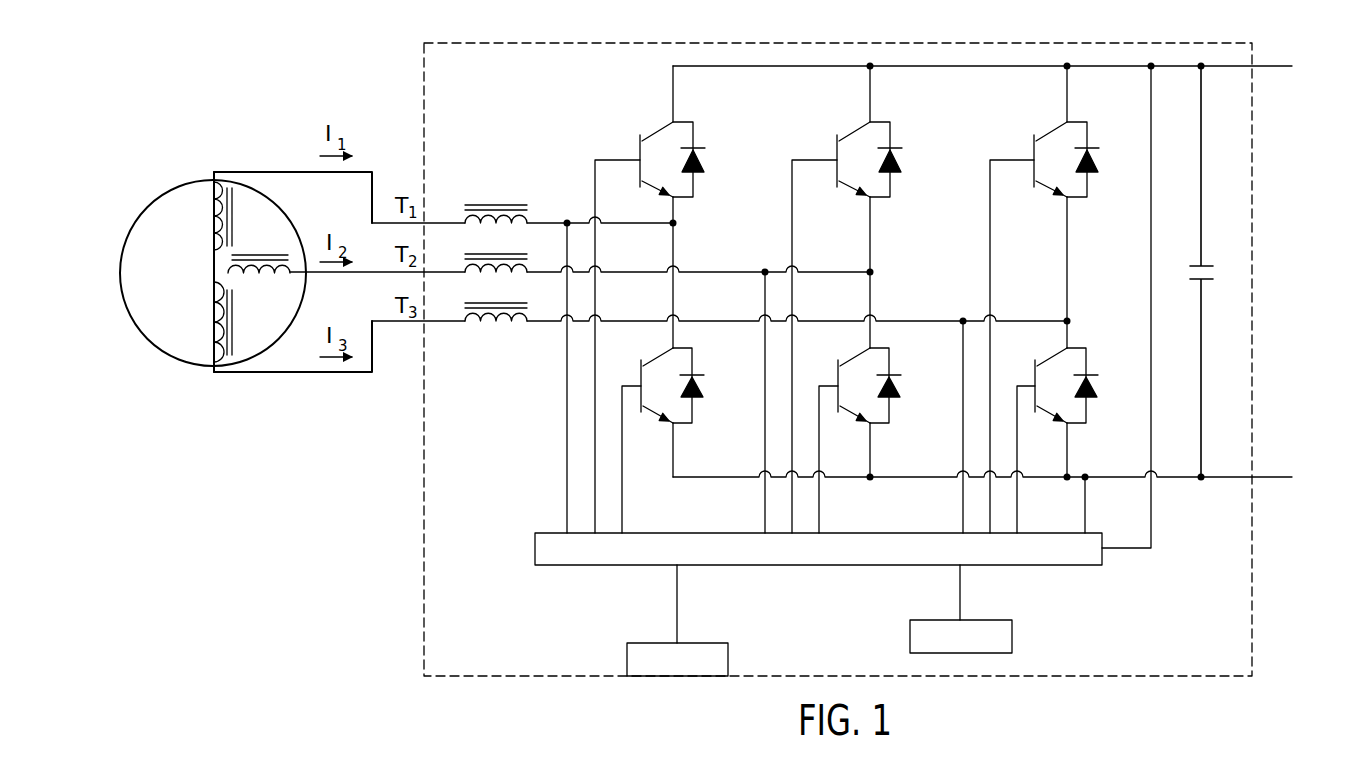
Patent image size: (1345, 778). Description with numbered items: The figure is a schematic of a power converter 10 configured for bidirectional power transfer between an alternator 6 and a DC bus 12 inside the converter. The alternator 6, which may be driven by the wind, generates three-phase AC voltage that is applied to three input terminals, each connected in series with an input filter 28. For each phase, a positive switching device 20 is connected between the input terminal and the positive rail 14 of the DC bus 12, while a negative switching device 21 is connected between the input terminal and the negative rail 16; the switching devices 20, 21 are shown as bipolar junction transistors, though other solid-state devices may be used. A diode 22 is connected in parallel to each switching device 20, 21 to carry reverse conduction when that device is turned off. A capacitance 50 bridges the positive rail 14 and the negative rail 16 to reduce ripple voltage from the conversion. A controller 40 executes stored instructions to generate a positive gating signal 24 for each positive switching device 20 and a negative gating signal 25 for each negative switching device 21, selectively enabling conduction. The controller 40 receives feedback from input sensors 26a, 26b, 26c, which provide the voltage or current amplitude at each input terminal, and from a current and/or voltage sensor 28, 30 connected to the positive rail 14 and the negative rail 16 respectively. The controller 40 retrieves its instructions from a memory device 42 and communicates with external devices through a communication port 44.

The alternator 6 is at (185, 378).
The power converter 10 is at (424, 94).
The DC bus 12 is at (1181, 52).
The positive rail 14 is at (1233, 67).
The negative rail 16 is at (1233, 477).
The positive switching device 20 is at (649, 122).
The negative switching device 21 is at (650, 348).
The diode 22 is at (712, 158).
The positive gating signal 24 is at (595, 182).
The negative gating signal 25 is at (622, 382).
The input sensor 26a is at (567, 222).
The input sensor 26b is at (765, 271).
The input sensor 26c is at (963, 320).
The input filter 28 is at (493, 198).
The current and/or voltage sensor 30 is at (1087, 476).
The controller 40 is at (535, 548).
The memory device 42 is at (910, 638).
The communication port 44 is at (627, 660).
The capacitance 50 is at (1215, 287).